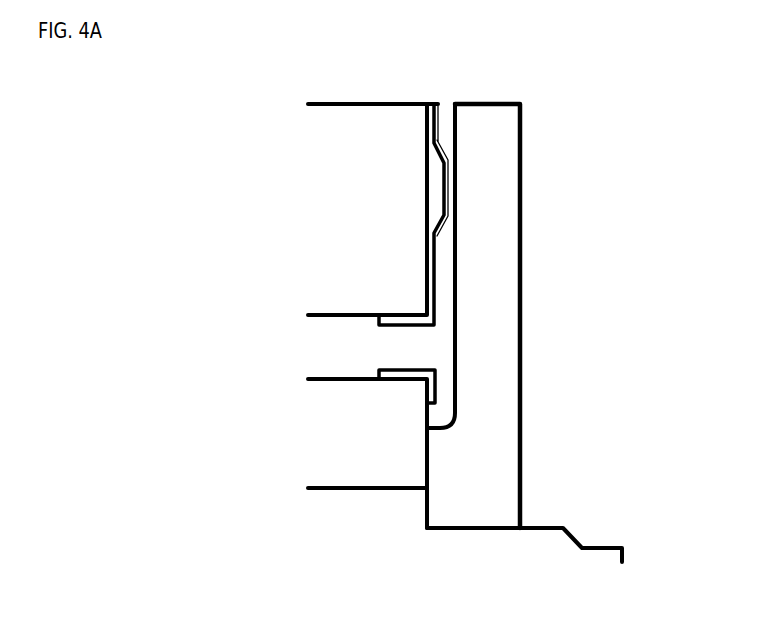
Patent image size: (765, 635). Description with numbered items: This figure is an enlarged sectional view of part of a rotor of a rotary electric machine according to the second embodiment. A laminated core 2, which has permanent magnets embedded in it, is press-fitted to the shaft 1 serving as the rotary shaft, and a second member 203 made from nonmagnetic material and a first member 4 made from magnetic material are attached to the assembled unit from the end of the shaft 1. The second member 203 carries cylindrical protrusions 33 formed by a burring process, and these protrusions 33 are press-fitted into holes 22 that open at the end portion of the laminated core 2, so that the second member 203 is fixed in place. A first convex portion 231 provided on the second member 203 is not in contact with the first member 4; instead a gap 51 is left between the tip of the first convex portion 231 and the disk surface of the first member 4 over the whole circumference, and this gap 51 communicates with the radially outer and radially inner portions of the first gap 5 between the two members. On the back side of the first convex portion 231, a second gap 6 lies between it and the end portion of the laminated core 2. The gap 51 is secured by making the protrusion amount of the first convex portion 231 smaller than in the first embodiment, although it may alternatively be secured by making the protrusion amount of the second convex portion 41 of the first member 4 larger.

The shaft 1 is at (565, 558).
The laminated core 2 is at (343, 105).
The first member 4 is at (500, 347).
The first gap 5 is at (442, 142).
The second gap 6 is at (430, 197).
The holes 22 is at (340, 378).
The protrusions 33 is at (380, 324).
The second convex portion 41 is at (437, 485).
The gap 51 is at (452, 195).
The second member 203 is at (440, 111).
The first convex portion 231 is at (427, 160).